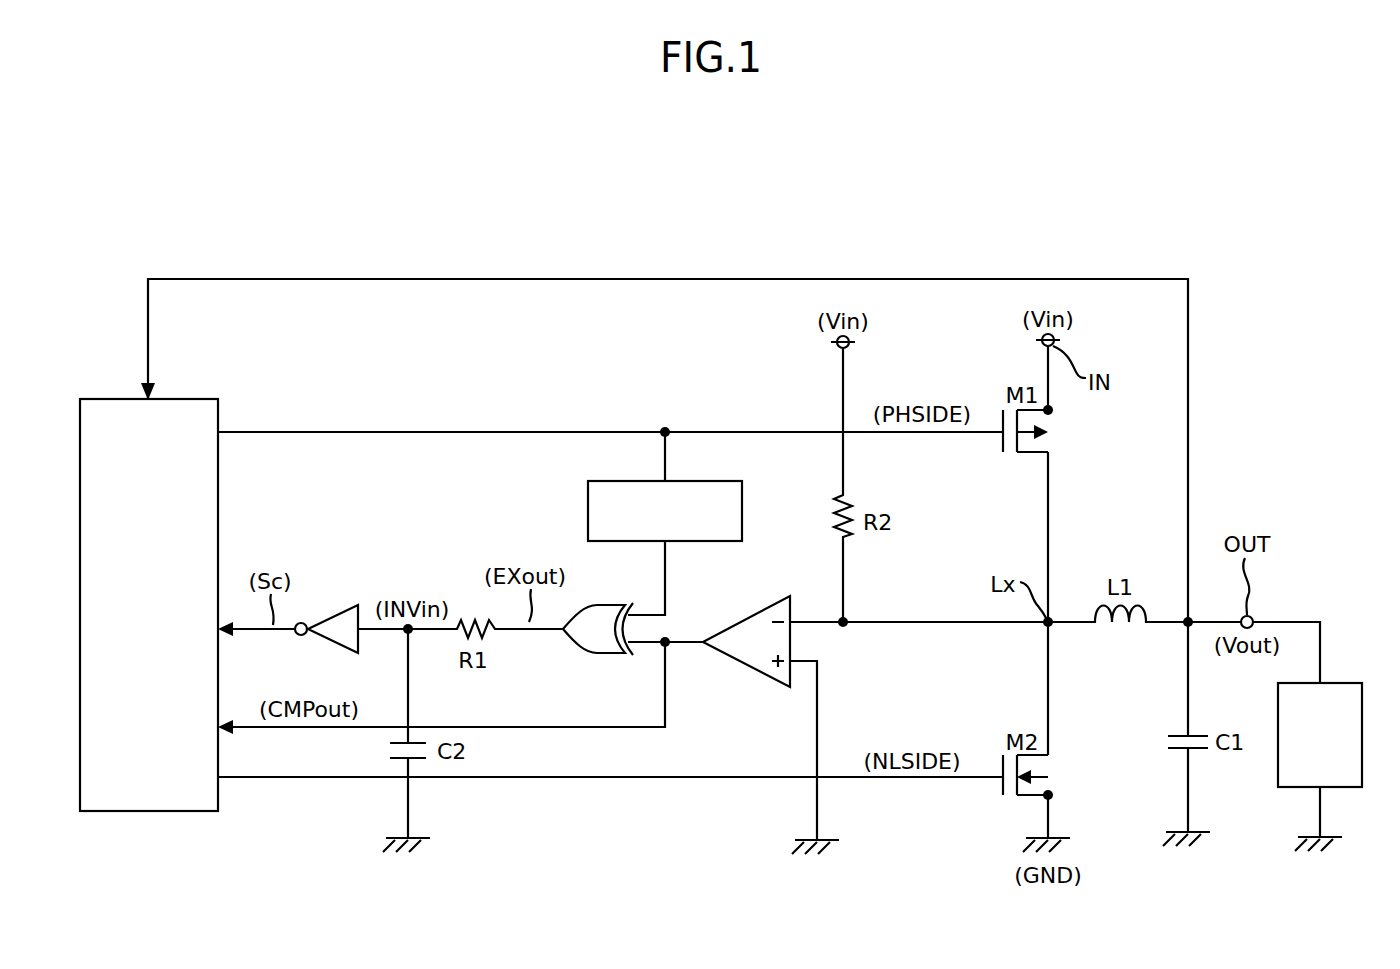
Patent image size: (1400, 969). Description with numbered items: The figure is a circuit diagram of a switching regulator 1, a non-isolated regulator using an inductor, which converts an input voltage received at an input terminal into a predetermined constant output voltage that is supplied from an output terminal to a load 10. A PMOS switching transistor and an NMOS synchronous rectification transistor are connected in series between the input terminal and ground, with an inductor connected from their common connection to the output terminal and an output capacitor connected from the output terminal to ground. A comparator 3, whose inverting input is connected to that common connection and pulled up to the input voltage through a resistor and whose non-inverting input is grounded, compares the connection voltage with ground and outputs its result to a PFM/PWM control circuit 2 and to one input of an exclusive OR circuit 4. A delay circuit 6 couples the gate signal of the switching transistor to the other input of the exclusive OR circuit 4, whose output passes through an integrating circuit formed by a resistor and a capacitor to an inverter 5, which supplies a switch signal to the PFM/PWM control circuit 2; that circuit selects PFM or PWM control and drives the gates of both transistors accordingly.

The switching regulator 1 is at (791, 240).
The PFM/PWM control circuit 2 is at (188, 399).
The comparator 3 is at (755, 612).
The exclusive OR circuit 4 is at (578, 655).
The inverter 5 is at (340, 604).
The delay circuit 6 is at (588, 511).
The load 10 is at (1340, 683).